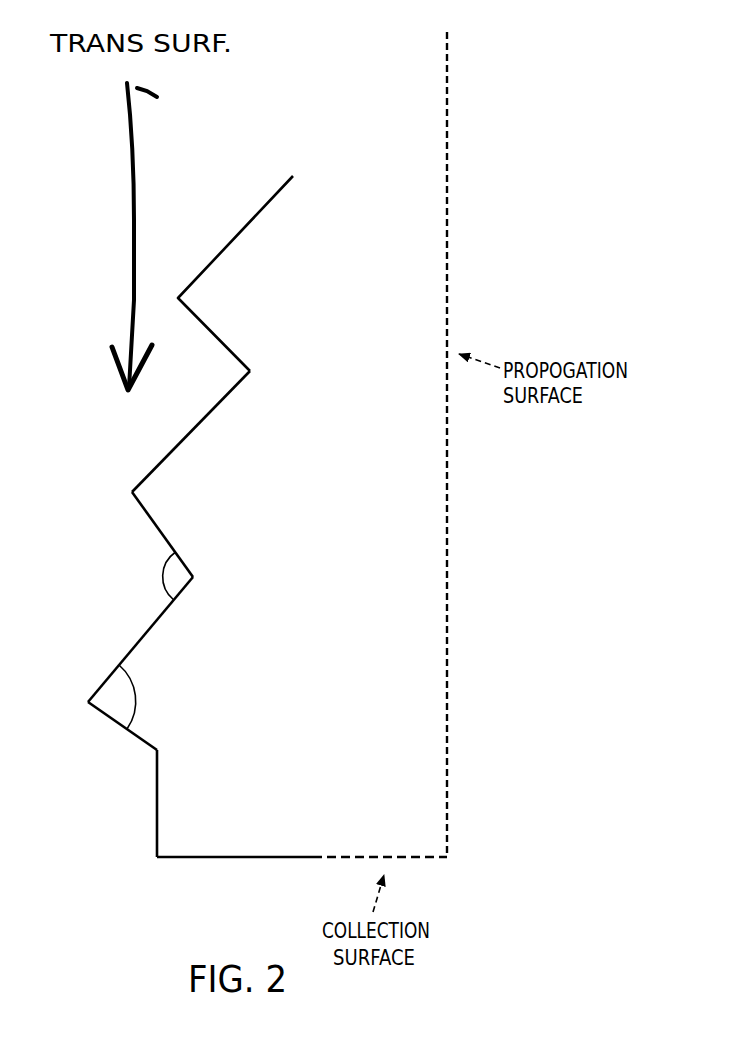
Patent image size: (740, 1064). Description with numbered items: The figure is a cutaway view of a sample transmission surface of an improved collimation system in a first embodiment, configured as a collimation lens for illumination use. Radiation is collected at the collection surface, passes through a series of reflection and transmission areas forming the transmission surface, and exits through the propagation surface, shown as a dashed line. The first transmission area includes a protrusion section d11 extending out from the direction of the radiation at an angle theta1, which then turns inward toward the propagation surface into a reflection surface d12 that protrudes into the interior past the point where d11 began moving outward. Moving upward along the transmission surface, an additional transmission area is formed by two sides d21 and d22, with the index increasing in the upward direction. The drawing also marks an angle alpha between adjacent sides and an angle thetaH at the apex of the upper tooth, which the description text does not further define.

The second side of second transmission area d22 is at (268, 397).
The first side of second transmission area d21 is at (167, 534).
The tooth apex angle thetaH is at (128, 579).
The reflection surface d12 is at (179, 572).
The angle between facets alpha is at (128, 697).
The protrusion section d11 is at (87, 712).
The angle of protrusion section theta1 is at (122, 803).